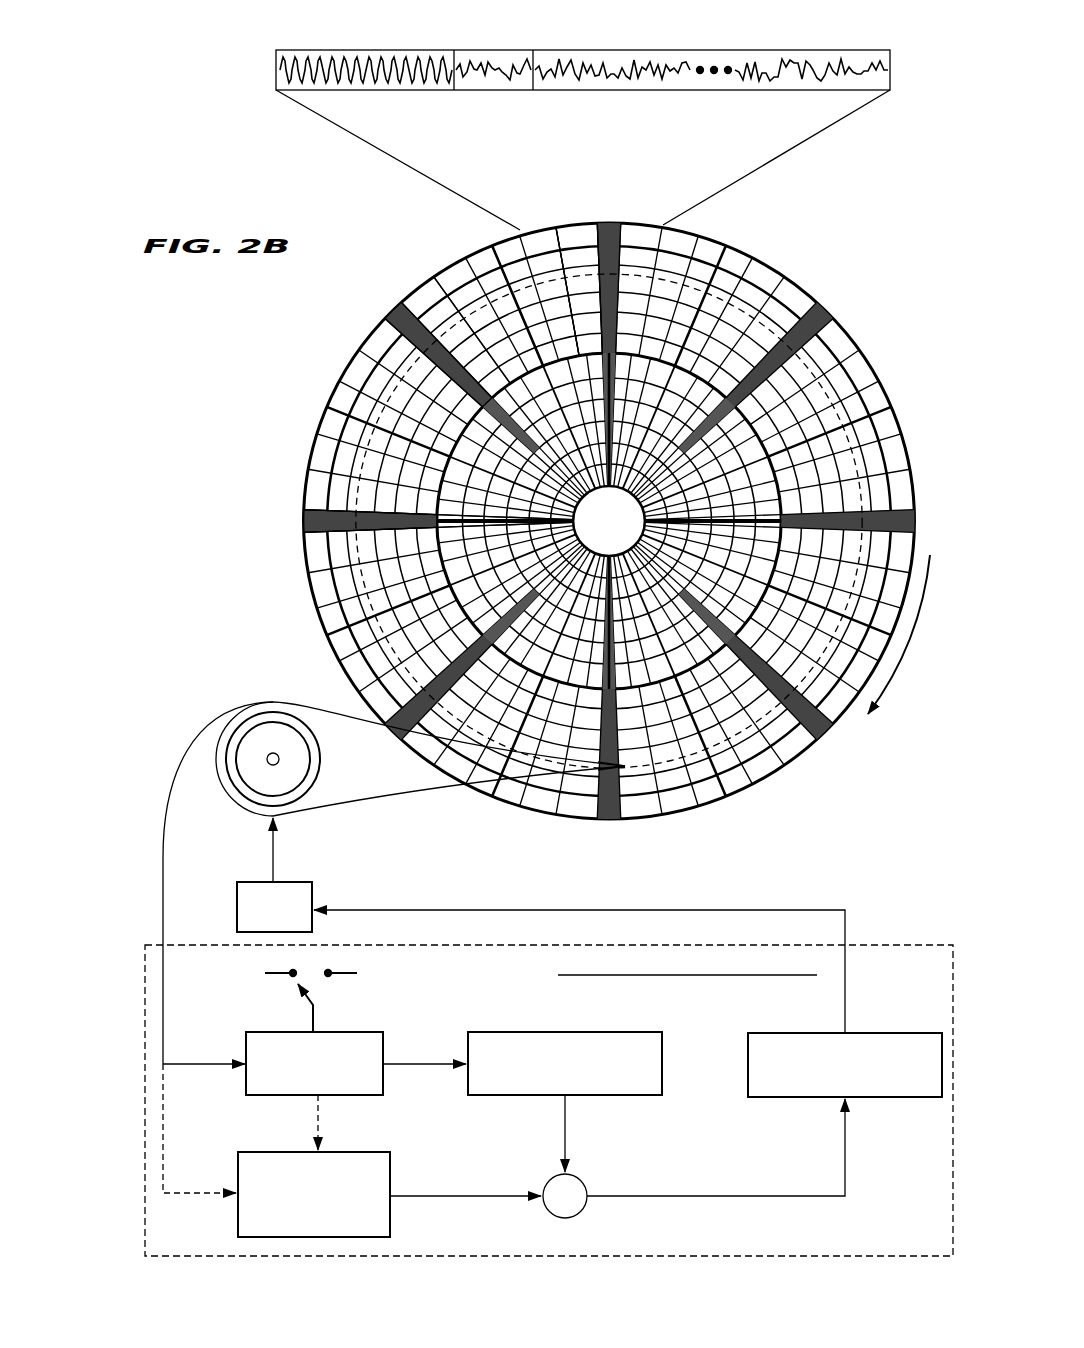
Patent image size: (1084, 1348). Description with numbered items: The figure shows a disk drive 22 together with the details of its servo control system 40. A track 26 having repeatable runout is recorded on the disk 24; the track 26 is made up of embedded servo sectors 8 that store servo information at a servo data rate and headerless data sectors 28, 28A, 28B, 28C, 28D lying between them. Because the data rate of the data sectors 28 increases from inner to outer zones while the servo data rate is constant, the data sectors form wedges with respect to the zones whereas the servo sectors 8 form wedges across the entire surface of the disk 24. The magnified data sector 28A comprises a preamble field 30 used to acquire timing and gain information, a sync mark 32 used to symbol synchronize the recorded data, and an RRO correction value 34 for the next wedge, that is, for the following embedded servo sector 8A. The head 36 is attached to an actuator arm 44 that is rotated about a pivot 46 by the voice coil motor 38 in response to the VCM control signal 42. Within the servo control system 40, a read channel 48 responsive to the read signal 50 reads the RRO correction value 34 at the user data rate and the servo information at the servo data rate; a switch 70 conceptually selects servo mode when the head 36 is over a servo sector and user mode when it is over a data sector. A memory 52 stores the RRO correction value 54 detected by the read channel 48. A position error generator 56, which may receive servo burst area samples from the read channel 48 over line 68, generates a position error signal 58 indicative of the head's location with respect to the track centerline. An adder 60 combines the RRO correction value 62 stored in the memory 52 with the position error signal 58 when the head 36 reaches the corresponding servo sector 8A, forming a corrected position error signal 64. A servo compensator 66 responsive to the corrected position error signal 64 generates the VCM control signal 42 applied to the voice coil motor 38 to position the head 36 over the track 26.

The disk drive 22 is at (222, 175).
The disk 24 is at (742, 242).
The track 26 is at (390, 400).
The data sector 28 is at (318, 545).
The data sector 28A is at (551, 178).
The data sector 28B is at (563, 270).
The data sector 28C is at (497, 287).
The data sector 28D is at (467, 307).
The embedded servo sector 8 is at (310, 518).
The embedded servo sector 8A is at (413, 318).
The preamble field 30 is at (403, 92).
The sync mark 32 is at (490, 92).
The RRO correction value 34 is at (685, 92).
The head 36 is at (655, 766).
The voice coil motor 38 is at (237, 910).
The servo control system 40 is at (918, 945).
The VCM control signal 42 is at (845, 910).
The actuator arm 44 is at (375, 803).
The pivot 46 is at (280, 760).
The read channel 48 is at (383, 1095).
The read signal 50 is at (163, 843).
The memory 52 is at (478, 1032).
The RRO correction value 54 is at (420, 1062).
The position error generator 56 is at (246, 1152).
The position error signal 58 is at (455, 1200).
The adder 60 is at (582, 1212).
The RRO correction value 62 is at (562, 1146).
The corrected position error signal 64 is at (717, 1200).
The servo compensator 66 is at (757, 1097).
The line 68 is at (313, 1122).
The switch 70 is at (318, 1008).